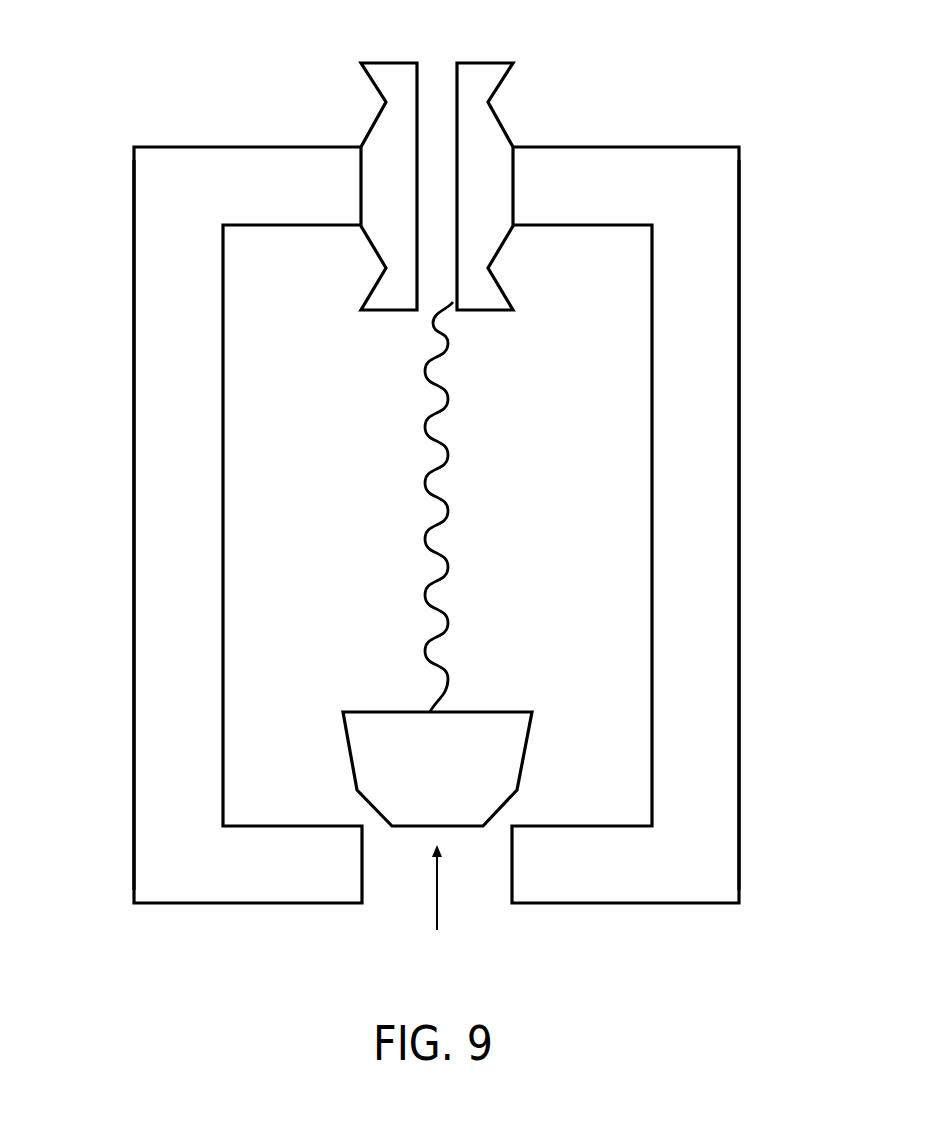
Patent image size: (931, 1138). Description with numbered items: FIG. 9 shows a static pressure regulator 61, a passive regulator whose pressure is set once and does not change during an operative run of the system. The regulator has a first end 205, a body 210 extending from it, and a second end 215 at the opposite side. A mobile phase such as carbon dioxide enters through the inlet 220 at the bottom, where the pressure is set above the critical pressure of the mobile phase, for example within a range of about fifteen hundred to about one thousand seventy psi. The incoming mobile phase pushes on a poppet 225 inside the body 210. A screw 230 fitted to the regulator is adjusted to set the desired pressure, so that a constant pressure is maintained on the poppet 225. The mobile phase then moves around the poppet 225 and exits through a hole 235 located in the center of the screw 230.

The static pressure regulator 61 is at (277, 102).
The first end 205 is at (743, 907).
The body 210 is at (150, 526).
The second end 215 is at (743, 146).
The inlet 220 is at (440, 889).
The poppet 225 is at (460, 776).
The screw 230 is at (485, 85).
The hole 235 is at (436, 58).